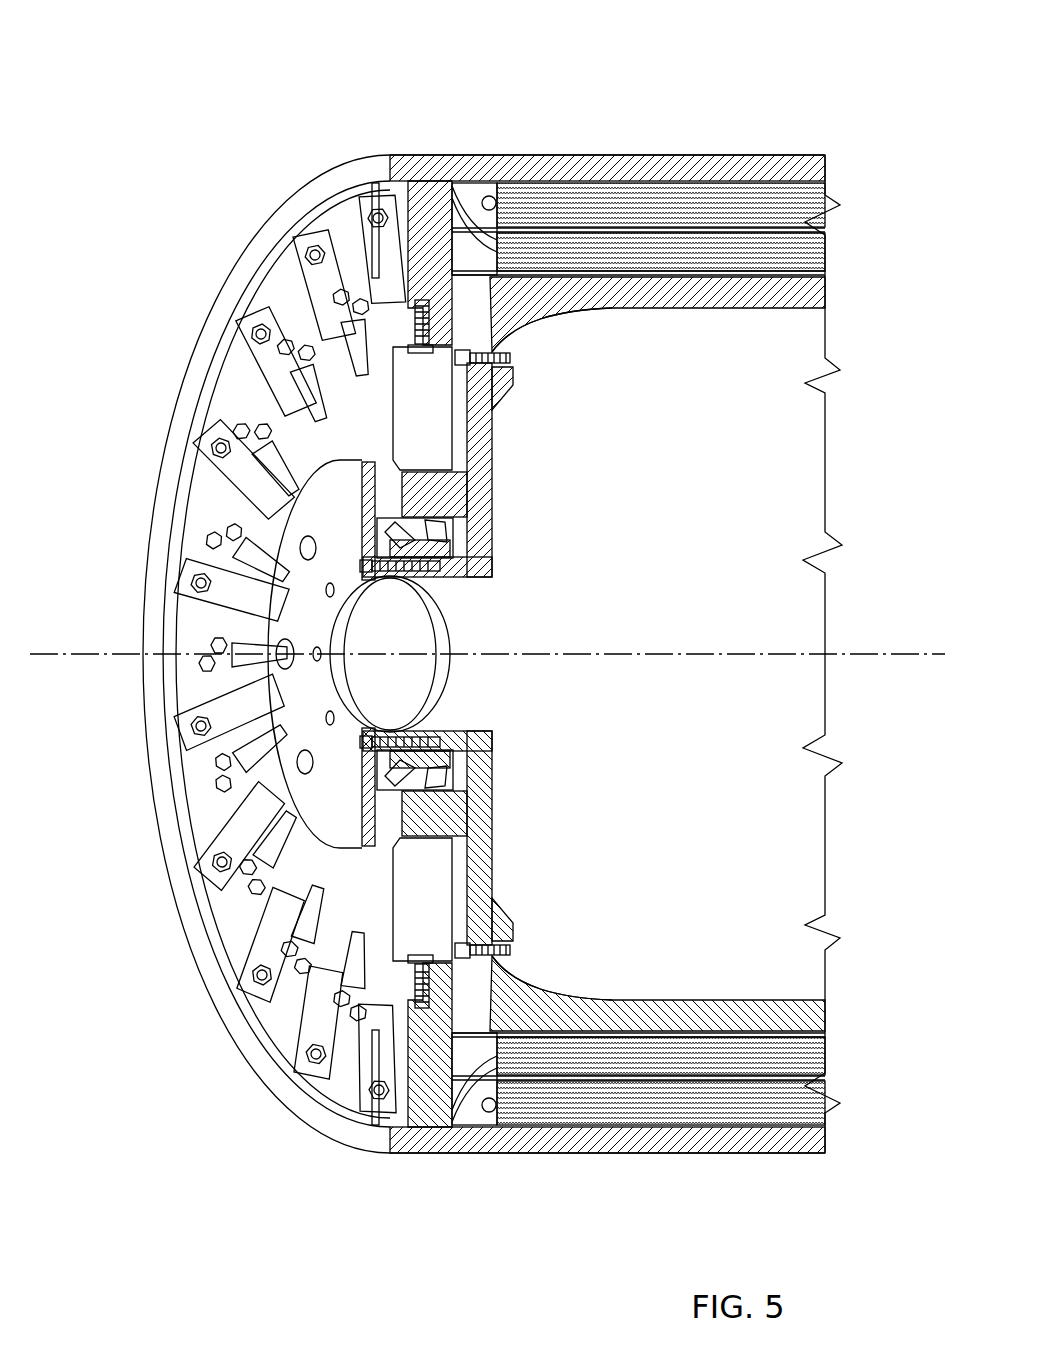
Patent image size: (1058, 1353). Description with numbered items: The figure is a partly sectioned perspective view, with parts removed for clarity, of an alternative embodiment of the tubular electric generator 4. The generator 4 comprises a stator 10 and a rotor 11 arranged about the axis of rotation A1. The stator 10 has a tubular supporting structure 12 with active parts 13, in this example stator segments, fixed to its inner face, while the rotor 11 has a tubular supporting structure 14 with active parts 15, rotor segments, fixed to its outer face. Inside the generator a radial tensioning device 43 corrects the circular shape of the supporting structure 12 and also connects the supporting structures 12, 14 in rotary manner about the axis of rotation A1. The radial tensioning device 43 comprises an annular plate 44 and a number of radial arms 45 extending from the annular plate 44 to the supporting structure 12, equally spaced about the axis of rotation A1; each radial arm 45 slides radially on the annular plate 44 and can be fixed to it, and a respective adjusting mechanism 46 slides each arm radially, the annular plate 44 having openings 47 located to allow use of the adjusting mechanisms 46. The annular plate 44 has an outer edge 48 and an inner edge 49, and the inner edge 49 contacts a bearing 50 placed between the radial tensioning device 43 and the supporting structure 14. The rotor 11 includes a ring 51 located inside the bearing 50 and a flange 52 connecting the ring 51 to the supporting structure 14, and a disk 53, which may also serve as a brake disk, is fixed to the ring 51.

The electric generator 4 is at (785, 78).
The stator 10 is at (828, 130).
The rotor 11 is at (768, 320).
The tubular supporting structure 12 is at (840, 160).
The active parts 13 is at (726, 205).
The tubular supporting structure 14 is at (836, 291).
The active parts 15 is at (740, 255).
The radial tensioning device 43 is at (150, 920).
The annular plate 44 is at (432, 484).
The radial arms 45 is at (428, 192).
The adjusting mechanisms 46 is at (424, 380).
The openings 47 is at (322, 400).
The outer edge 48 is at (376, 268).
The inner edge 49 is at (456, 576).
The bearing 50 is at (452, 548).
The ring 51 is at (442, 742).
The flange 52 is at (482, 826).
The disk 53 is at (275, 682).
The axis of rotation A1 is at (790, 654).